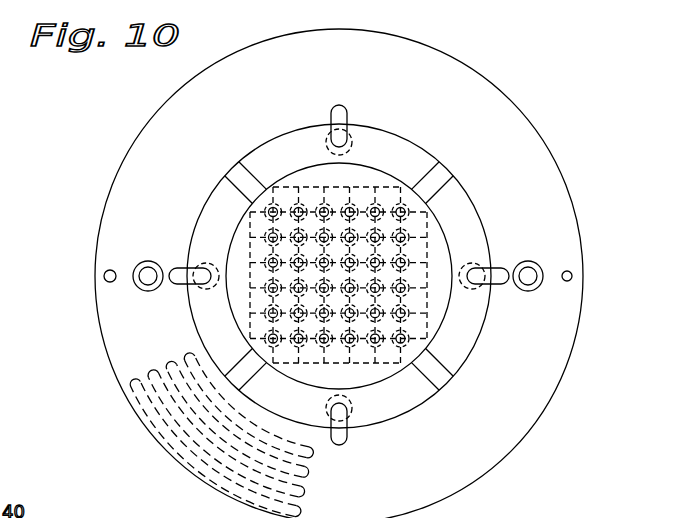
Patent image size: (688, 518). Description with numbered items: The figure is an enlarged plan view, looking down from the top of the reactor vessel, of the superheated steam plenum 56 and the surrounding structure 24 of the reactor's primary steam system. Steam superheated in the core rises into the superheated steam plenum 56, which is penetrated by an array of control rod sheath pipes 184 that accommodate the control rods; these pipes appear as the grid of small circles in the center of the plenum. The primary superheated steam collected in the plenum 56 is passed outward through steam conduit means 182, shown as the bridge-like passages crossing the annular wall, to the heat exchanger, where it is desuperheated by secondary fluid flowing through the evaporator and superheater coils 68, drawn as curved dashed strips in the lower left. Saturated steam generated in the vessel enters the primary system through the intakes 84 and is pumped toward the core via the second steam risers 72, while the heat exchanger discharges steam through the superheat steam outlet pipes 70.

The circular mounting plate 24 is at (522, 112).
The superheated steam plenum 56 is at (413, 412).
The evaporator and superheater coils 68 is at (150, 374).
The superheat steam outlet pipes 70 is at (572, 278).
The second steam risers 72 is at (528, 291).
The intakes 84 is at (466, 289).
The steam conduit means 182 is at (443, 185).
The control rod sheath pipes 184 is at (407, 209).